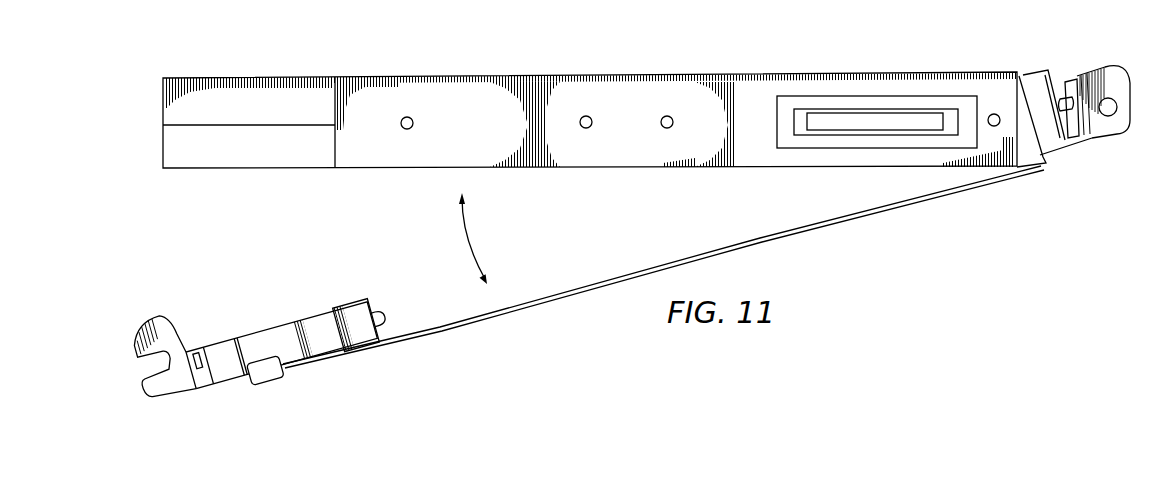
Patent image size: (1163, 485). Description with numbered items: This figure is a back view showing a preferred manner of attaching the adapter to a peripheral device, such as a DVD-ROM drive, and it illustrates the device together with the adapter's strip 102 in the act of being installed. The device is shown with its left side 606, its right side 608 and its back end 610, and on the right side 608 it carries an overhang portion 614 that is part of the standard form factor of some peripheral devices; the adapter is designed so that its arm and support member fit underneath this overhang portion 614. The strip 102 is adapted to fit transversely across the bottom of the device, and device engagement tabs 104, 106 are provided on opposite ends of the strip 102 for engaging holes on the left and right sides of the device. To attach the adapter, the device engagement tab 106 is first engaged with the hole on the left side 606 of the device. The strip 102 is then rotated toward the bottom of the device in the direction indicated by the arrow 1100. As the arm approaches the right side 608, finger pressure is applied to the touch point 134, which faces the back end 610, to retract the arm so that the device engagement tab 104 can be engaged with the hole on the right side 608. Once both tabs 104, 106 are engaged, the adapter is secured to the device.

The strip 102 is at (873, 213).
The device engagement tab 104 is at (388, 312).
The device engagement tab 106 is at (1013, 90).
The touch point 134 is at (362, 312).
The left side 606 is at (1019, 154).
The right side 608 is at (335, 153).
The back end 610 is at (444, 93).
The overhang portion 614 is at (163, 63).
The arrow 1100 is at (468, 235).